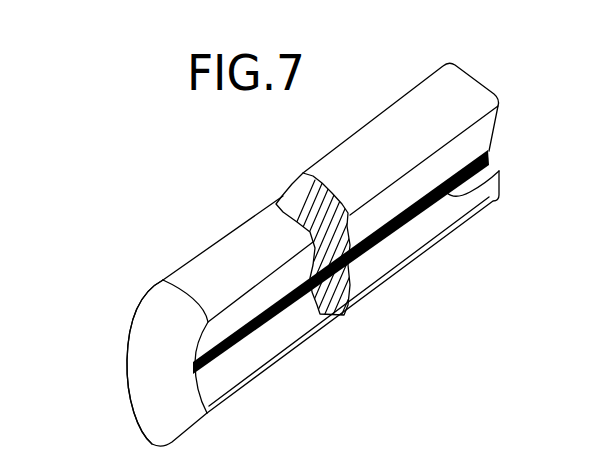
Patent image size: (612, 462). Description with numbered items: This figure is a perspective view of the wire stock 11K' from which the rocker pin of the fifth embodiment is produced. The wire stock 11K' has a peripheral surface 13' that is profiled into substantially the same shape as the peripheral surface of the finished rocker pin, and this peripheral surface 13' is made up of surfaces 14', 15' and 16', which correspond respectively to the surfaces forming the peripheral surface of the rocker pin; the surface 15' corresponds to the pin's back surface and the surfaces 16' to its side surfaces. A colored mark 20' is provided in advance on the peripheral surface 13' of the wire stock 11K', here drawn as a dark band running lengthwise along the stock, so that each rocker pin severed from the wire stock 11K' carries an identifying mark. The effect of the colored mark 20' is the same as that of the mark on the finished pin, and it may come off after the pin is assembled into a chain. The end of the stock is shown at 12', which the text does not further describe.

The wire stock 11K' is at (139, 338).
The end face of plug body 12' is at (150, 371).
The peripheral surface 13' is at (388, 171).
The surface 14' is at (96, 362).
The back surface 15' is at (353, 225).
The side surface 16' is at (331, 299).
The colored mark 20' is at (382, 259).